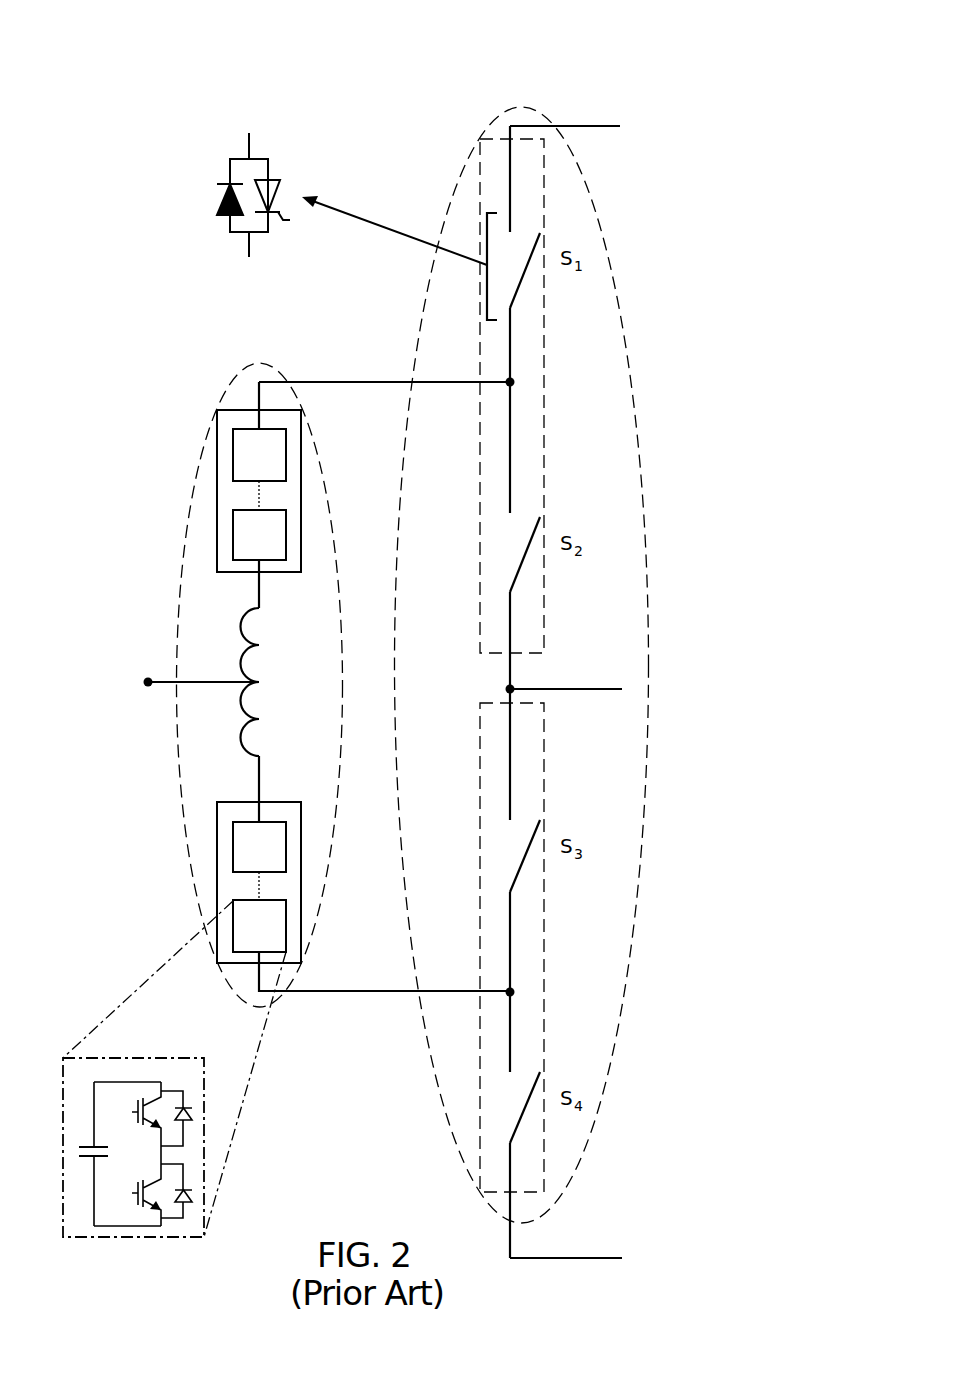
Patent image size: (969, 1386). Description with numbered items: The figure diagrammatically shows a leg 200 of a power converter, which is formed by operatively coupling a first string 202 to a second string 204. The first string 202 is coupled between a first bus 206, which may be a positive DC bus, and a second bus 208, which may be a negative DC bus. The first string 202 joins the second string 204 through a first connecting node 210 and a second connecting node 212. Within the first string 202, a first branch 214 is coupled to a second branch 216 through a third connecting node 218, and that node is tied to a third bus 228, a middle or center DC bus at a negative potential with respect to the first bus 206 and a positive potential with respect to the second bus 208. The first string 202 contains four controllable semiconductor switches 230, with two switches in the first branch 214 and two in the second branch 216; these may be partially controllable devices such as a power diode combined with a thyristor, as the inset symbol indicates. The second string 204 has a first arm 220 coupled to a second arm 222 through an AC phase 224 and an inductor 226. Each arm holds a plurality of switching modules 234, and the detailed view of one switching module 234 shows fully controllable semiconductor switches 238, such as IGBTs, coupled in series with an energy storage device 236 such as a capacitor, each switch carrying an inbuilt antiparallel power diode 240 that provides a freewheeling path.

The leg 200 is at (215, 62).
The first string 202 is at (628, 288).
The second string 204 is at (188, 507).
The first bus 206 is at (608, 118).
The second bus 208 is at (590, 1258).
The first connecting node 210 is at (515, 382).
The second connecting node 212 is at (515, 992).
The first branch 214 is at (545, 167).
The second branch 216 is at (545, 1148).
The third connecting node 218 is at (513, 692).
The first arm 220 is at (237, 410).
The second arm 222 is at (217, 852).
The AC phase 224 is at (198, 680).
The inductor 226 is at (240, 735).
The third bus 228 is at (607, 687).
The controllable semiconductor switches 230 is at (275, 133).
The switching module 234 is at (233, 927).
The energy storage device 236 is at (85, 1157).
The fully controllable semiconductor switch 238 is at (134, 1202).
The power diode 240 is at (200, 1111).